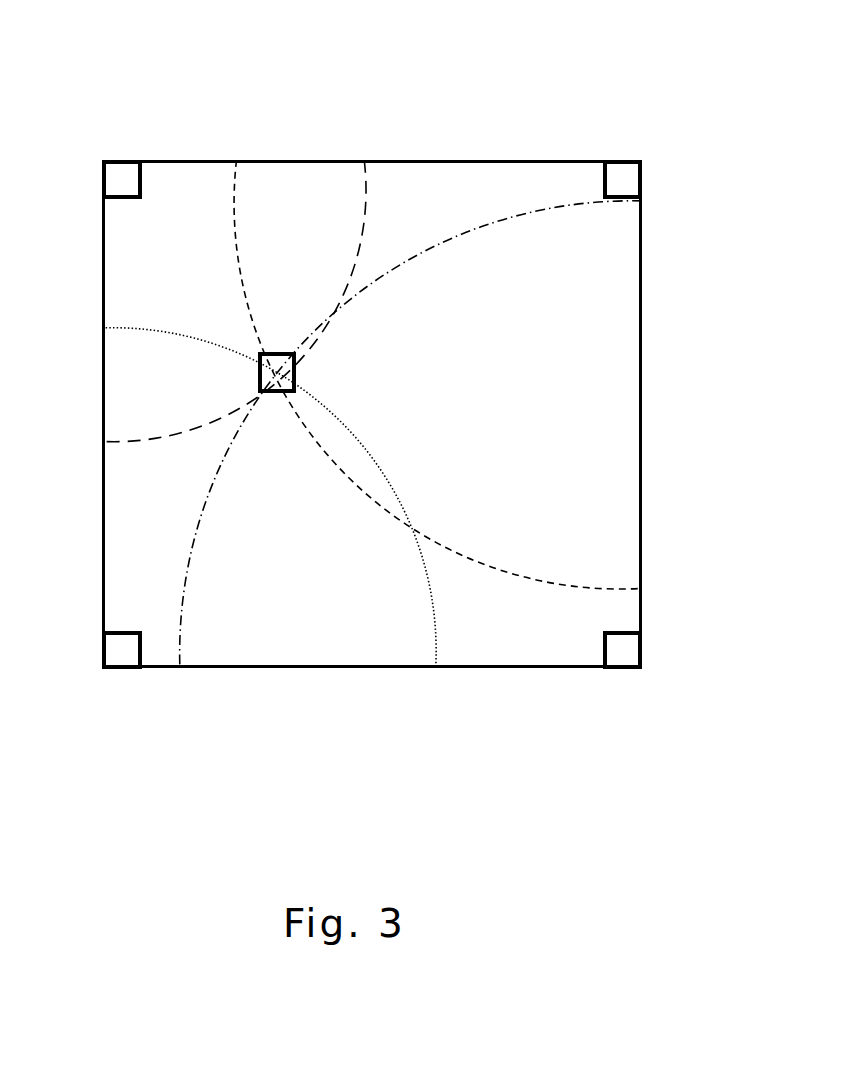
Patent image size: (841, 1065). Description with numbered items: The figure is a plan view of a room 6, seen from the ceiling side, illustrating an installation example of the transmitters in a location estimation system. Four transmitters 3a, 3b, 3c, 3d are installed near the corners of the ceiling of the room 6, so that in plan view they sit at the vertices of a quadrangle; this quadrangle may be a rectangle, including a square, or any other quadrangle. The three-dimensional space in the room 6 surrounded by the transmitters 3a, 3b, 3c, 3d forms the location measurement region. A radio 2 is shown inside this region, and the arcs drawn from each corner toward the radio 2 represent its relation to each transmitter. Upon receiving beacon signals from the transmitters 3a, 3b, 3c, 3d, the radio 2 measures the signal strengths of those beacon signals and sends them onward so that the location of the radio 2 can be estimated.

The room 6 is at (360, 40).
The radio 2 is at (296, 378).
The transmitter 3a is at (114, 669).
The transmitter 3b is at (623, 669).
The transmitter 3c is at (122, 160).
The transmitter 3d is at (625, 160).